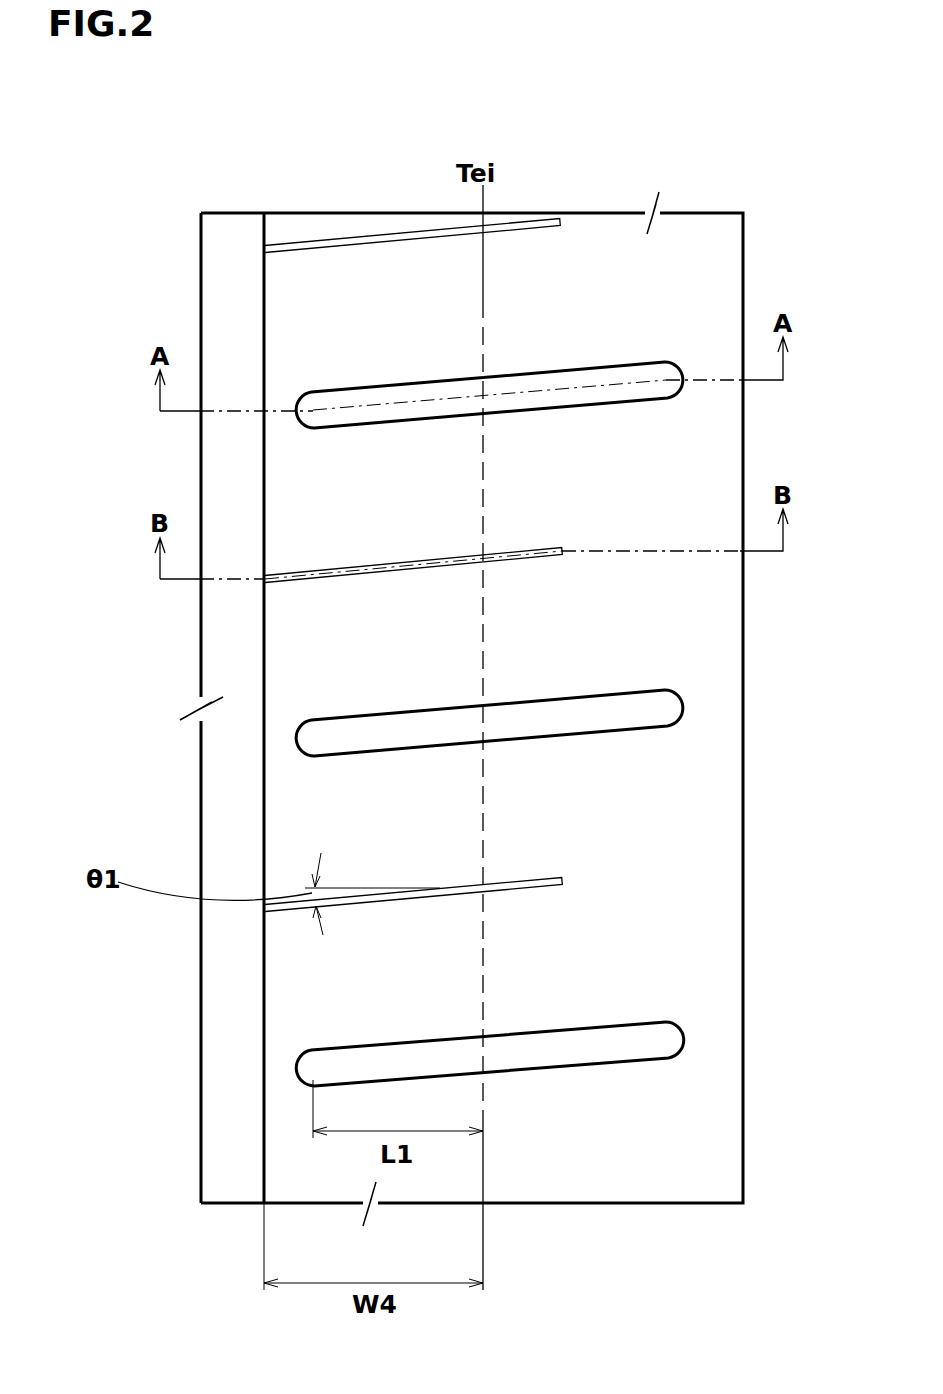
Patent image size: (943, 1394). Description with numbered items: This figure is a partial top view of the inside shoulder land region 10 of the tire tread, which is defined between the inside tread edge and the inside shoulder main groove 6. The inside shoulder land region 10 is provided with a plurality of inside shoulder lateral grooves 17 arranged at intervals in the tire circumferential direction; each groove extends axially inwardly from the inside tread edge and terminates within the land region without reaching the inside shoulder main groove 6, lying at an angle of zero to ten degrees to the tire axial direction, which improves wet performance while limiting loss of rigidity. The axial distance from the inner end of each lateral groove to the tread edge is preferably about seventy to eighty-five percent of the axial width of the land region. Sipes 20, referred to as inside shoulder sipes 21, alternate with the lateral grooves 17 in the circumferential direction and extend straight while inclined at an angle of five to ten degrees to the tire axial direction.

The inside shoulder main groove 6 is at (232, 258).
The inside shoulder land region 10 is at (388, 283).
The inside shoulder lateral groove 17 is at (390, 392).
The sipe 20 is at (345, 245).
The inside shoulder sipe 21 is at (400, 566).